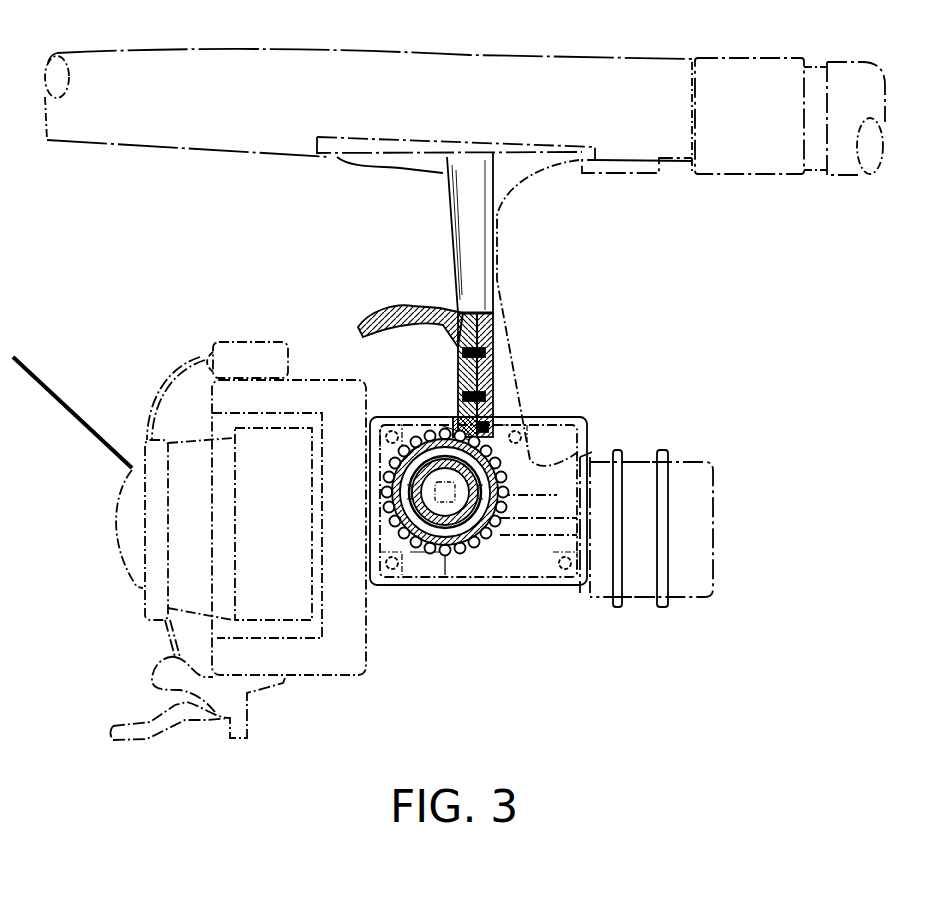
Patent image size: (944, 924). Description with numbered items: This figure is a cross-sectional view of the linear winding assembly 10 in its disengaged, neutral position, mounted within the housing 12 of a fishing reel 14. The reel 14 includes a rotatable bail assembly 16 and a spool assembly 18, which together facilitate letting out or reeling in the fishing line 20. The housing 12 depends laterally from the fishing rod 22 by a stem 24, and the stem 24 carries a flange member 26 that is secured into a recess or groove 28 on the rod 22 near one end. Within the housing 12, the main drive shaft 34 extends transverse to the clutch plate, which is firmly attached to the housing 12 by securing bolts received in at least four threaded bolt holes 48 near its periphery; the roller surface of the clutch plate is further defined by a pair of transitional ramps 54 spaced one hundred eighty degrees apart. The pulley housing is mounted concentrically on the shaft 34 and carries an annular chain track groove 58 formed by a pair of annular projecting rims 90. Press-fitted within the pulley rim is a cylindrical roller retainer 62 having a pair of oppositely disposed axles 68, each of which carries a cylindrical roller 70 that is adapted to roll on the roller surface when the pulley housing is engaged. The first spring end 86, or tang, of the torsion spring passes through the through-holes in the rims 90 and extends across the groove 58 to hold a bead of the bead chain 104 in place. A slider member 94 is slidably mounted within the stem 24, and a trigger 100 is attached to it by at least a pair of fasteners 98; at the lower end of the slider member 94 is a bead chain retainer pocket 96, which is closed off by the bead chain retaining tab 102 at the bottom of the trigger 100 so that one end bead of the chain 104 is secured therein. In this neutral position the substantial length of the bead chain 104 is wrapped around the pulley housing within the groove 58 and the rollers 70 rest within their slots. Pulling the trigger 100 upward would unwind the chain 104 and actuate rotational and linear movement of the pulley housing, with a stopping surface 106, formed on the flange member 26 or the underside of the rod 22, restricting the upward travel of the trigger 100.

The linear winding assembly 10 is at (494, 650).
The housing 12 is at (550, 590).
The fishing reel 14 is at (603, 304).
The rotatable bail assembly 16 is at (187, 357).
The spool assembly 18 is at (113, 508).
The fishing line 20 is at (38, 373).
The fishing rod 22 is at (460, 53).
The stem 24 is at (497, 247).
The flange member 26 is at (358, 160).
The recess or groove 28 is at (512, 142).
The main drive shaft 34 is at (457, 528).
The threaded bolt holes 48 is at (385, 568).
The transitional ramps 54 is at (380, 520).
The annular chain track groove 58 is at (530, 452).
The cylindrical roller retainer 62 is at (447, 505).
The axles 68 is at (383, 485).
The cylindrical rollers 70 is at (407, 450).
The first spring end 86 is at (470, 428).
The annular projecting rims 90 is at (470, 427).
The slider member 94 is at (487, 340).
The bead chain retainer pocket 96 is at (490, 423).
The fasteners 98 is at (493, 380).
The trigger 100 is at (410, 305).
The bead chain retaining tab 102 is at (473, 427).
The bead chain 104 is at (433, 566).
The stopping surface 106 is at (417, 170).